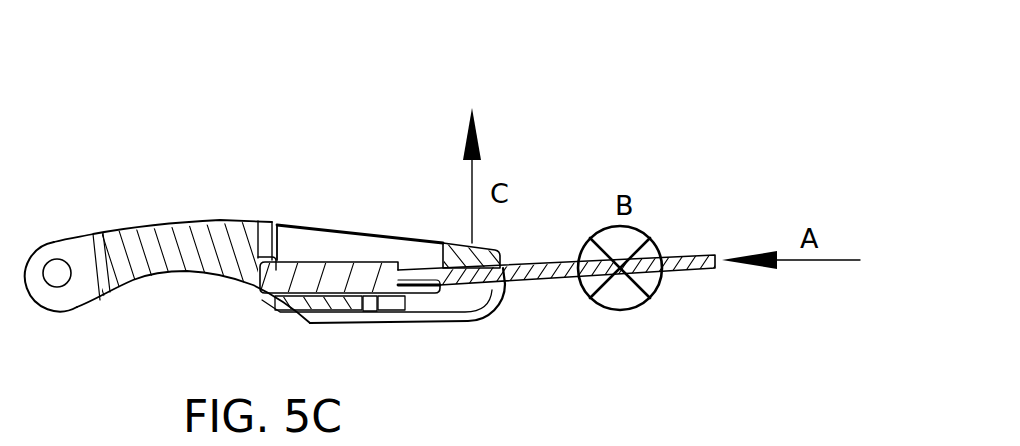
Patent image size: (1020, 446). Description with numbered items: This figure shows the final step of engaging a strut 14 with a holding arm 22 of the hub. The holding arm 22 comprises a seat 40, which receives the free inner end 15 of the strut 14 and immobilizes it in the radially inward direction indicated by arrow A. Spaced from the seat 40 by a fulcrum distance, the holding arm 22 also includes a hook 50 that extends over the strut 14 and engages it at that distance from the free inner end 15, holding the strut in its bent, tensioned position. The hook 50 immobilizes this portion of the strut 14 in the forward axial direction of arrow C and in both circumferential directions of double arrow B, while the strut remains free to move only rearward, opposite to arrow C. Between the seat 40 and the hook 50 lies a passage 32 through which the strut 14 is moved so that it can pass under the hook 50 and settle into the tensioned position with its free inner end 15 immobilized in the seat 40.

The strut 14 is at (676, 256).
The free inner end 15 is at (338, 262).
The holding arm 22 is at (157, 253).
The passage 32 is at (410, 286).
The seat 40 is at (258, 255).
The hook 50 is at (452, 262).